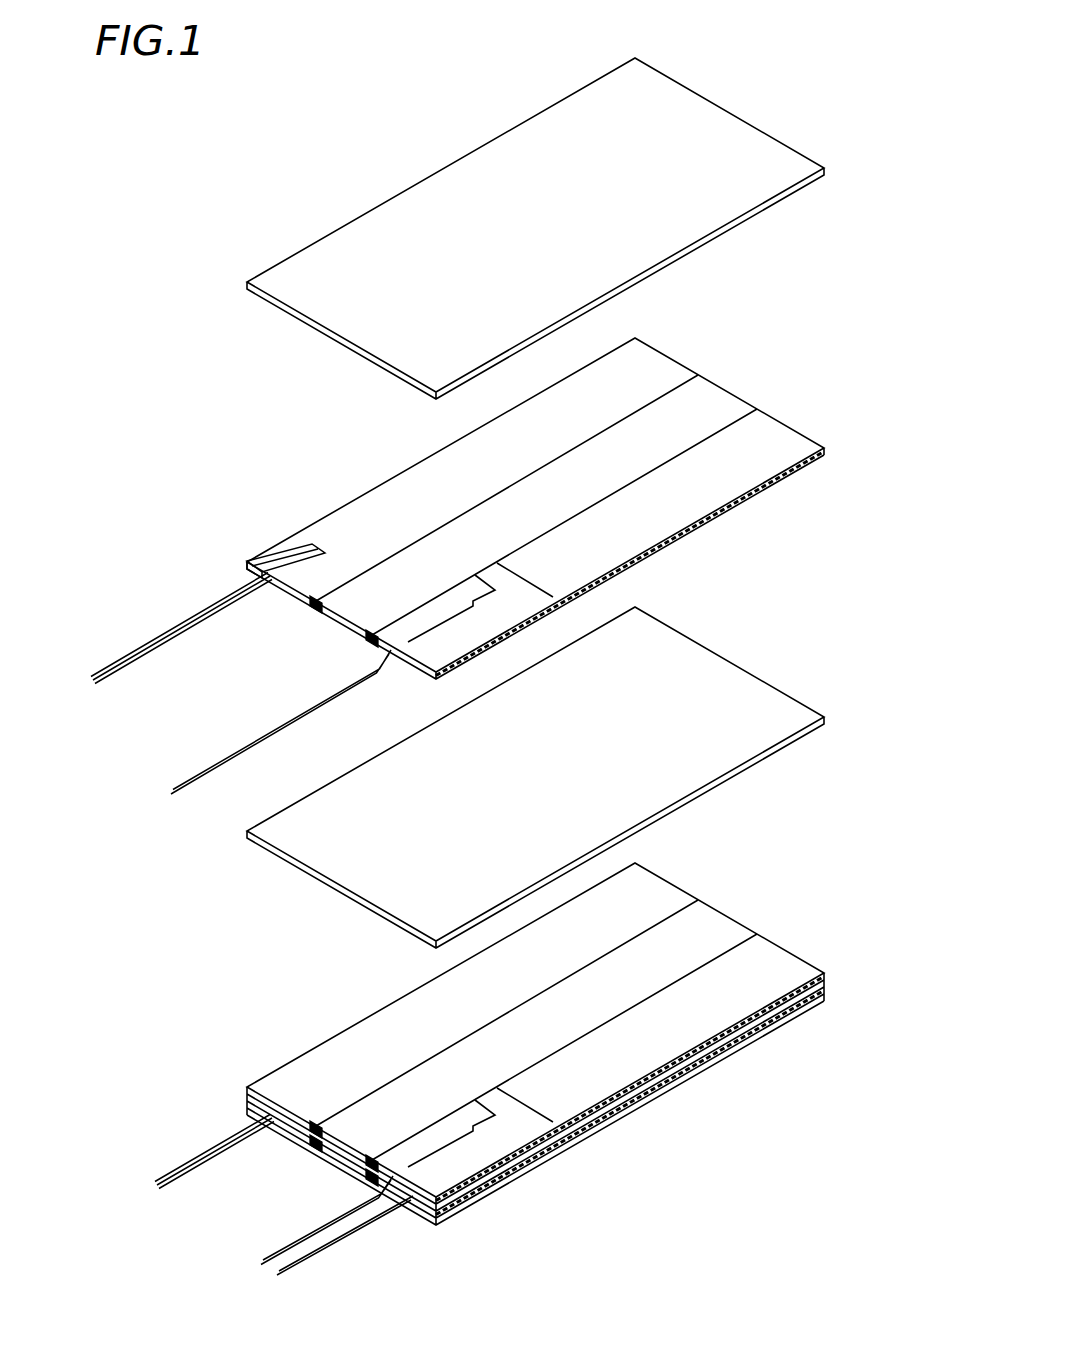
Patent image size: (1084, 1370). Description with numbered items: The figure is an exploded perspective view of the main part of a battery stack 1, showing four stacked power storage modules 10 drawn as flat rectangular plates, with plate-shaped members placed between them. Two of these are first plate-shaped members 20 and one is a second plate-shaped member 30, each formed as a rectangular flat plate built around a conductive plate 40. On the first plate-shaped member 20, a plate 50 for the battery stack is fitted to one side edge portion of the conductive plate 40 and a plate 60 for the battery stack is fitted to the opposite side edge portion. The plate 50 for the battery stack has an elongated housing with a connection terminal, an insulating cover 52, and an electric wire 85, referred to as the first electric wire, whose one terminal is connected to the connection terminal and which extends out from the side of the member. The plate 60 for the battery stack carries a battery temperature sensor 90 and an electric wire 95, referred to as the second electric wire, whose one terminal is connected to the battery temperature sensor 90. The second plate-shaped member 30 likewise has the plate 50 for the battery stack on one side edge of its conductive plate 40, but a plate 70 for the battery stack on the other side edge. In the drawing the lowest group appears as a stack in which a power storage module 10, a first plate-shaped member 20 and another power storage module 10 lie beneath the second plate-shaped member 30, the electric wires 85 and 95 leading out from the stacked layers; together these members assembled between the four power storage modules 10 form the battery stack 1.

The battery stack 1 is at (255, 172).
The power storage module 10 is at (752, 119).
The first plate-shaped member 20 is at (756, 400).
The second plate-shaped member 30 is at (756, 926).
The conductive plate 40 is at (648, 432).
The plate for the battery stack 50 is at (703, 490).
The insulating cover 52 is at (453, 641).
The plate for the battery stack 60 is at (425, 487).
The plate for the battery stack 70 is at (355, 1035).
The electric wire 85 is at (263, 740).
The battery temperature sensor 90 is at (295, 562).
The electric wire 95 is at (195, 620).